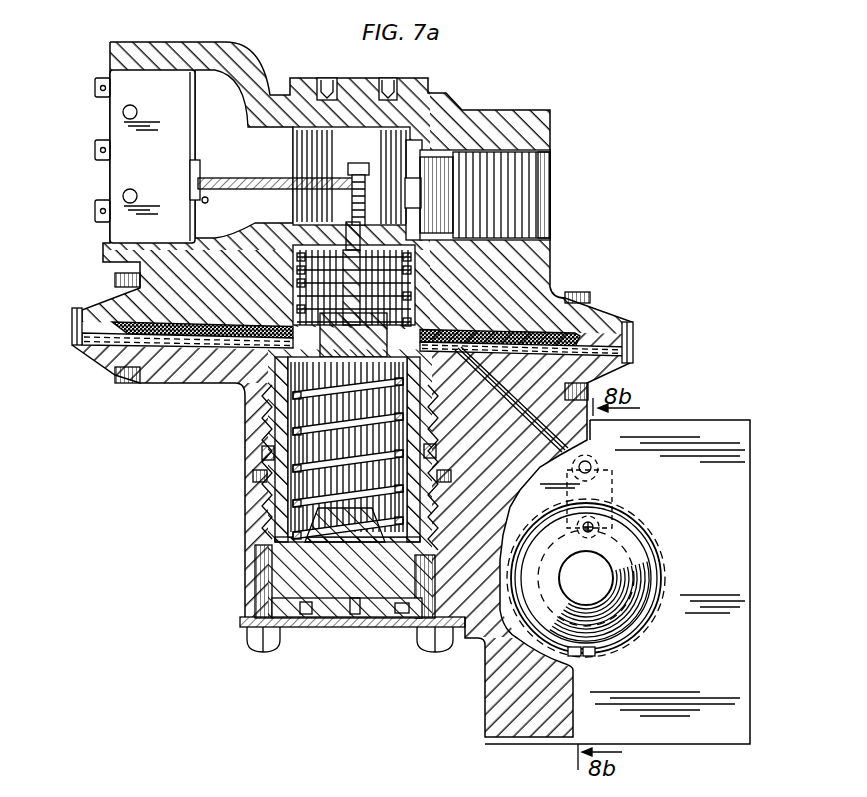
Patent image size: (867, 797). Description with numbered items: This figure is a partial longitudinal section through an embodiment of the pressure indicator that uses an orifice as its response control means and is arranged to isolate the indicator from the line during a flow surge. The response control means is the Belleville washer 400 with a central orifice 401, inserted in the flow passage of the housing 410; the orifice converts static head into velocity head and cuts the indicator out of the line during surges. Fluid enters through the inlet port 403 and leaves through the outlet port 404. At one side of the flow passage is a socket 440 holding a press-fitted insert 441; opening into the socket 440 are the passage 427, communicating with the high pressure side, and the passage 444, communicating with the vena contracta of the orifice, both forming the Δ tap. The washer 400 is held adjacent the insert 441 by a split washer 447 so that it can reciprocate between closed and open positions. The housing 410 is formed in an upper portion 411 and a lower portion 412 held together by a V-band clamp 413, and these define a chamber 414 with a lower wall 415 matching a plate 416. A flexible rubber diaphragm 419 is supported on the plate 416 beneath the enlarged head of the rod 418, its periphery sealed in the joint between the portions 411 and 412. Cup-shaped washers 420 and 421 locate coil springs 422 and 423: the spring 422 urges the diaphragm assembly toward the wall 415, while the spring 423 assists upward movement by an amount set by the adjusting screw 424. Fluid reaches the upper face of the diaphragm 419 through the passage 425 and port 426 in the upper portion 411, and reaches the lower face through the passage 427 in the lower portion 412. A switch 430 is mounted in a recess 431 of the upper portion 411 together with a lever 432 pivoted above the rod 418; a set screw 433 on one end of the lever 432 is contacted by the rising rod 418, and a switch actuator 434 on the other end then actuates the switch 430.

The Belleville washer 400 is at (632, 597).
The central orifice 401 is at (595, 582).
The inlet port 403 is at (535, 560).
The outlet port 404 is at (525, 640).
The housing 410 is at (176, 436).
The upper portion of the housing 411 is at (512, 115).
The lower portion of the housing 412 is at (245, 470).
The V-band clamp 413 is at (78, 328).
The chamber 414 is at (510, 334).
The lower wall 415 is at (204, 350).
The plate 416 is at (163, 330).
The rod 418 is at (297, 297).
The flexible rubber diaphragm 419 is at (530, 353).
The cup-shaped washer 420 is at (277, 330).
The cup-shaped washer 421 is at (290, 360).
The coil spring 422 is at (395, 333).
The coil spring 423 is at (405, 528).
The adjusting screw 424 is at (370, 585).
The passage 425 is at (418, 175).
The port 426 is at (520, 206).
The passage 427 is at (542, 433).
The switch 430 is at (108, 187).
The recess 431 is at (295, 165).
The lever 432 is at (282, 190).
The set screw 433 is at (348, 200).
The switch actuator 434 is at (232, 162).
The socket 440 is at (640, 538).
The insert 441 is at (612, 478).
The passage 444 is at (607, 512).
The split washer 447 is at (612, 640).